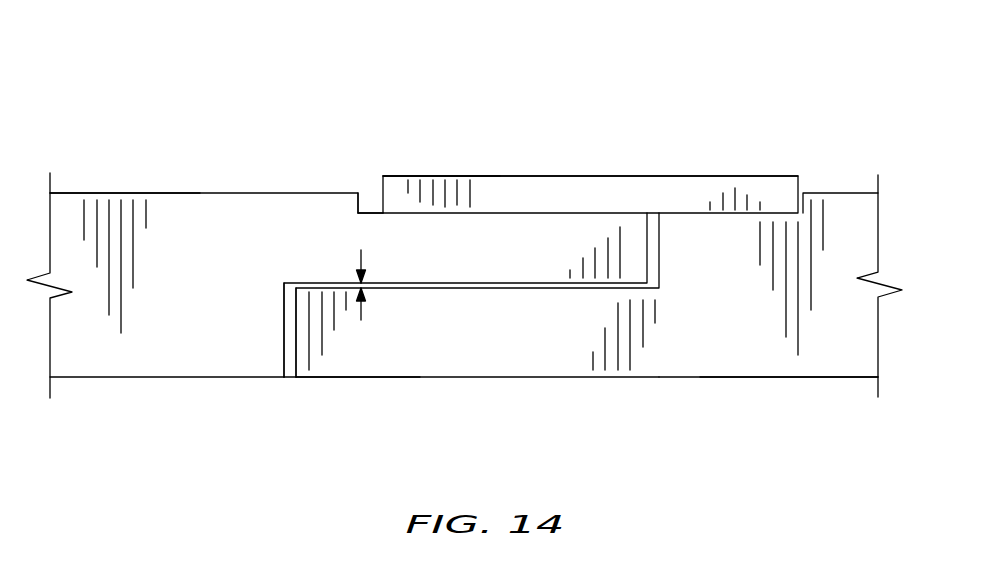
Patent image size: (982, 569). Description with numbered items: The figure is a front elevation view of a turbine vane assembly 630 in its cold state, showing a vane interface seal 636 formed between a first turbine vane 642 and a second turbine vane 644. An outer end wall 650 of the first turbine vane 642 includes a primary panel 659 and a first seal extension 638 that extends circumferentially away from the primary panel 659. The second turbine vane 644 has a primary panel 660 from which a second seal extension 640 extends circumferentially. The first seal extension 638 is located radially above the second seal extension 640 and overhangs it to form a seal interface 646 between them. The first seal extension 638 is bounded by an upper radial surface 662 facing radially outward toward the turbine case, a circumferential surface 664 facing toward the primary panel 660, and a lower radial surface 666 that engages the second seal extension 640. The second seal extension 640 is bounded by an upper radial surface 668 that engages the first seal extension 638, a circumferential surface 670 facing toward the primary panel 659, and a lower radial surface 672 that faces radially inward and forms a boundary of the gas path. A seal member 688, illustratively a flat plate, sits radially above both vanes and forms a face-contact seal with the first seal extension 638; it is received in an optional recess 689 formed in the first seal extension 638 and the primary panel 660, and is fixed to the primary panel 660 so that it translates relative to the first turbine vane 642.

The turbine vane assembly 630 is at (642, 125).
The vane interface seal 636 is at (440, 75).
The first seal extension 638 is at (277, 220).
The second seal extension 640 is at (472, 368).
The first turbine vane 642 is at (195, 103).
The second turbine vane 644 is at (733, 422).
The seal interface 646 is at (361, 242).
The outer end wall 650 is at (205, 241).
The primary panel 659 is at (208, 230).
The primary panel 660 is at (773, 367).
The upper radial surface 662 is at (442, 212).
The circumferential surface 664 is at (505, 250).
The lower radial surface 666 is at (448, 281).
The upper radial surface 668 is at (517, 285).
The circumferential surface 670 is at (296, 335).
The lower radial surface 672 is at (363, 377).
The seal member 688 is at (770, 190).
The recess 689 is at (371, 188).